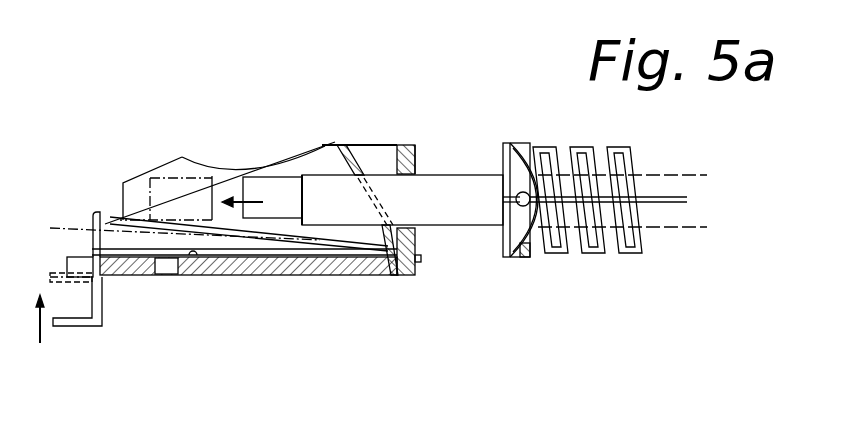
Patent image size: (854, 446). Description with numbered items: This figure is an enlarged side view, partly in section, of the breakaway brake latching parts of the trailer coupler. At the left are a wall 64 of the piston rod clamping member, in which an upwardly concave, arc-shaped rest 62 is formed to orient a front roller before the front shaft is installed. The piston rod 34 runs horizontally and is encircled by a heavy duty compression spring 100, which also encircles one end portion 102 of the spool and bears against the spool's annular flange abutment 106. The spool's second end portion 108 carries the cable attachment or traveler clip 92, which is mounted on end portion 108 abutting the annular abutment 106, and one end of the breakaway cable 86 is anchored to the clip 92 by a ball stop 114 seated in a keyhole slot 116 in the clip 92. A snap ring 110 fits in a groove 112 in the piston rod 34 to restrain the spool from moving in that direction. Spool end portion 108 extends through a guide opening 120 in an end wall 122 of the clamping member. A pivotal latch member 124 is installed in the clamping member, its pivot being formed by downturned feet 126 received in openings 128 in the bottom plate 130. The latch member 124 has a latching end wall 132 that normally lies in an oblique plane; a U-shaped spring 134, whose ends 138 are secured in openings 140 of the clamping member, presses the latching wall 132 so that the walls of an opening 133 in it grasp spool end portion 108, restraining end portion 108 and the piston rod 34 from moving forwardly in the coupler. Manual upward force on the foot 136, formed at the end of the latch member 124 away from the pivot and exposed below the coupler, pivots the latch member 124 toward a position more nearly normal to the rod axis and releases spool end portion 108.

The piston rod 34 is at (278, 276).
The rest 62 is at (233, 167).
The wall 64 is at (182, 157).
The breakaway cable 86 is at (662, 177).
The cable attachment clip 92 is at (503, 160).
The compression spring 100 is at (592, 149).
The end portion of spool 102 is at (610, 216).
The annular flange abutment 106 is at (524, 258).
The second end portion of spool 108 is at (483, 215).
The snap ring 110 is at (303, 205).
The groove 112 is at (300, 201).
The ball stop 114 is at (546, 150).
The keyhole slot 116 is at (515, 198).
The guide opening 120 is at (420, 172).
The end wall 122 is at (419, 257).
The pivotal latch member 124 is at (117, 238).
The downturned feet 126 is at (390, 279).
The openings 128 is at (388, 277).
The bottom plate 130 is at (180, 275).
The latching end wall 132 is at (362, 148).
The opening 133 is at (393, 224).
The spring 134 is at (364, 195).
The foot 136 is at (86, 327).
The spring ends 138 is at (416, 264).
The openings 140 is at (425, 255).